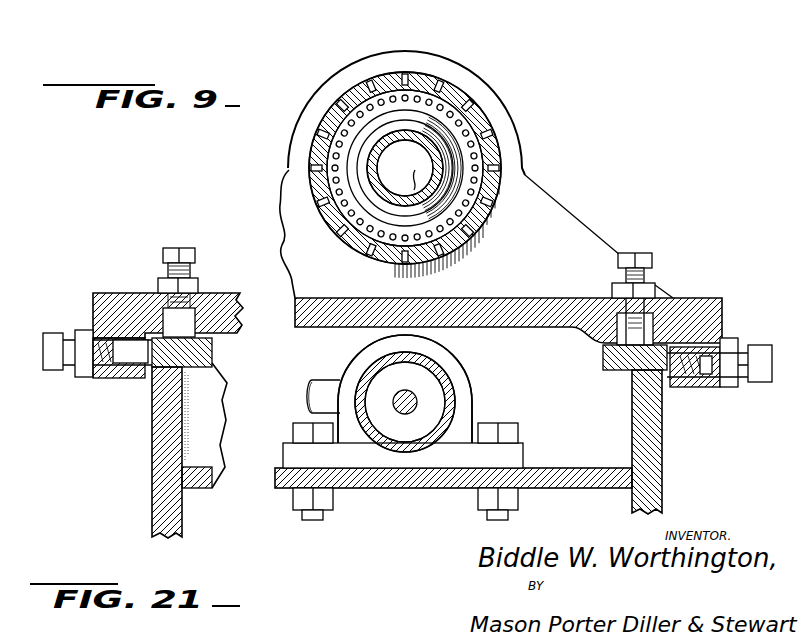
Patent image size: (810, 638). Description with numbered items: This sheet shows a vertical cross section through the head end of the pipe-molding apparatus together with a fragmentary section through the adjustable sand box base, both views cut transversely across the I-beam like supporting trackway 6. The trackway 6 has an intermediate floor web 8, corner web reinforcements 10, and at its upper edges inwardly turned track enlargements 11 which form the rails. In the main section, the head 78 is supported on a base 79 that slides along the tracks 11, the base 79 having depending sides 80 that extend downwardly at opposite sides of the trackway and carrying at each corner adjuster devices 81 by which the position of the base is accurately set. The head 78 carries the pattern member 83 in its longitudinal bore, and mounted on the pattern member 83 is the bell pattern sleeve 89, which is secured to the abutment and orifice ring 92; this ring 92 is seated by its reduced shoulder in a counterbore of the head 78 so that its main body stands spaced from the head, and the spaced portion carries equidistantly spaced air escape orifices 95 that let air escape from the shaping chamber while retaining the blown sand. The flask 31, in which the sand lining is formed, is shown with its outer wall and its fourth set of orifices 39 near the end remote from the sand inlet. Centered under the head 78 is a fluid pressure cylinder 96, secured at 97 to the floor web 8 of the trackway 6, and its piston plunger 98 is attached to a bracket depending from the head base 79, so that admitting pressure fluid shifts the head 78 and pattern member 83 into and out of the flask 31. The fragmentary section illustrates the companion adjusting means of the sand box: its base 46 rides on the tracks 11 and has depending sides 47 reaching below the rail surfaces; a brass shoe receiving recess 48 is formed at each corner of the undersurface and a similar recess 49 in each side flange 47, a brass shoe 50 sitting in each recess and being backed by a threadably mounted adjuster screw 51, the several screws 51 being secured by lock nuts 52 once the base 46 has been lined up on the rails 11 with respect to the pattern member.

In FIG. 9, the supporting trackway 6 is at (660, 458).
In FIG. 21, the supporting trackway 6 is at (162, 520).
In FIG. 9, the intermediate floor web 8 is at (433, 488).
In FIG. 21, the intermediate floor web 8 is at (193, 477).
In FIG. 9, the corner web reinforcements 10 is at (604, 371).
In FIG. 21, the corner web reinforcements 10 is at (193, 437).
In FIG. 9, the inwardly turned track enlargements 11 is at (603, 355).
In FIG. 21, the inwardly turned track enlargements 11 is at (207, 353).
In FIG. 9, the flask 31 is at (525, 148).
In FIG. 9, the fourth set of orifices 39 is at (343, 107).
In FIG. 21, the base 46 is at (237, 293).
In FIG. 21, the depending sides 47 is at (102, 380).
In FIG. 21, the brass shoe receiving recess 48 is at (200, 317).
In FIG. 21, the recess 49 is at (137, 337).
In FIG. 21, the brass shoe 50 is at (187, 323).
In FIG. 21, the adjuster screw 51 is at (183, 250).
In FIG. 21, the lock nuts 52 is at (160, 287).
In FIG. 9, the head 78 is at (500, 102).
In FIG. 9, the base 79 is at (537, 297).
In FIG. 9, the depending sides 80 is at (712, 323).
In FIG. 9, the adjuster devices 81 is at (643, 260).
In FIG. 9, the pattern member 83 is at (403, 174).
In FIG. 9, the bell pattern sleeve 89 is at (370, 165).
In FIG. 9, the abutment and orifice ring 92 is at (394, 149).
In FIG. 9, the air escape orifices 95 is at (422, 100).
In FIG. 9, the fluid pressure cylinder 96 is at (438, 378).
In FIG. 9, the securing means 97 is at (303, 513).
In FIG. 9, the piston plunger 98 is at (418, 400).